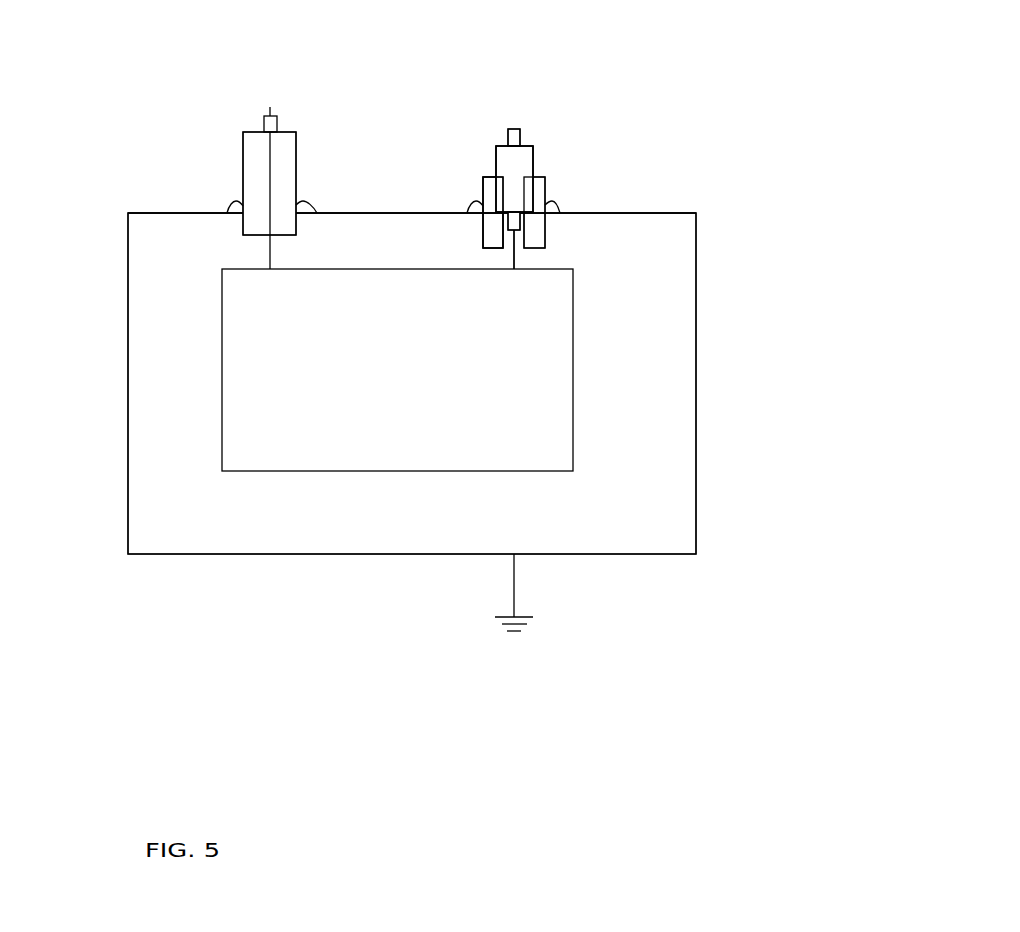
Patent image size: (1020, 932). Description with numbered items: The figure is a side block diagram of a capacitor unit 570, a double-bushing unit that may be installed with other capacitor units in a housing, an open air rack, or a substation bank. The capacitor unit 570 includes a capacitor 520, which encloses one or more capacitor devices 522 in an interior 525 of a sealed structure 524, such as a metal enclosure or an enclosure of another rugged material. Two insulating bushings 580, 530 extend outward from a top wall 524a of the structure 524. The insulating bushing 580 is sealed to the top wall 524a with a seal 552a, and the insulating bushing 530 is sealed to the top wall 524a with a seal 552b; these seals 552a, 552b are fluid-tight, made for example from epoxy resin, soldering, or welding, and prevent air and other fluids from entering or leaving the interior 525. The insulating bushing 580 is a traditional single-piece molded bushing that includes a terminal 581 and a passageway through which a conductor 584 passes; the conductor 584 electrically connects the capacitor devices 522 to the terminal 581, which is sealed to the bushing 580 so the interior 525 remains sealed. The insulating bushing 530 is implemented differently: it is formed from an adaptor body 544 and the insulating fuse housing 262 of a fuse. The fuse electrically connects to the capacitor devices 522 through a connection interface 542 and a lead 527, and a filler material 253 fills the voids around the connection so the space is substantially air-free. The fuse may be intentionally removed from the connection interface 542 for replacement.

The capacitor unit 570 is at (810, 20).
The capacitor 520 is at (755, 442).
The capacitor devices 522 is at (397, 370).
The sealed structure 524 is at (695, 390).
The top wall 524a is at (677, 213).
The interior 525 is at (175, 541).
The lead 527 is at (517, 257).
The insulating bushing 530 is at (458, 179).
The connection interface 542 is at (520, 221).
The adaptor body 544 is at (552, 203).
The seal 552a is at (228, 210).
The seal 552b is at (543, 225).
The insulating bushing 580 is at (232, 162).
The terminal 581 is at (277, 130).
The conductor 584 is at (268, 198).
The insulating fuse housing 262 is at (525, 153).
The filler material 253 is at (486, 219).